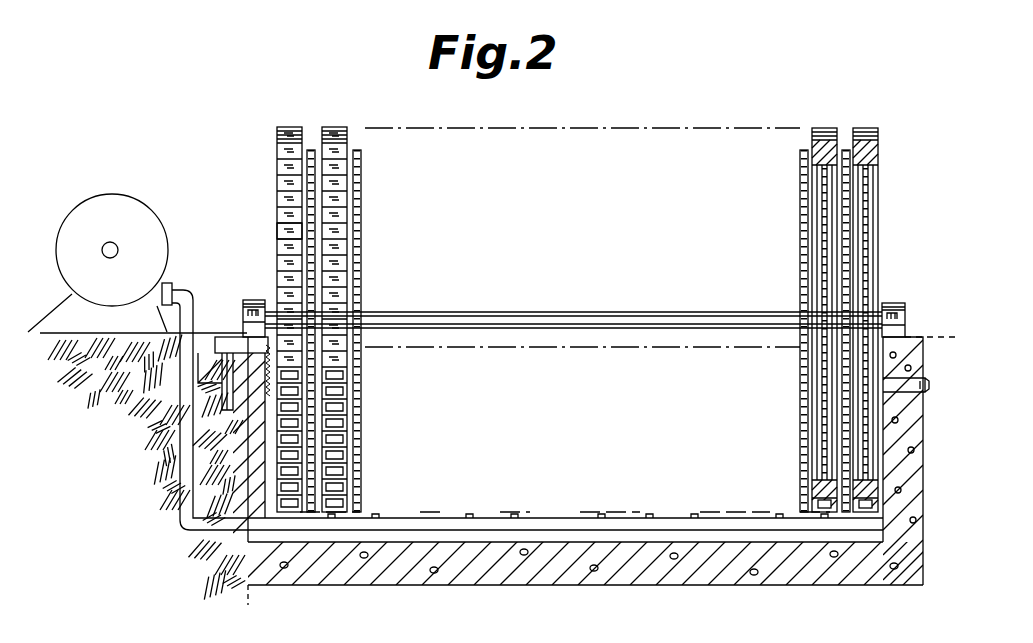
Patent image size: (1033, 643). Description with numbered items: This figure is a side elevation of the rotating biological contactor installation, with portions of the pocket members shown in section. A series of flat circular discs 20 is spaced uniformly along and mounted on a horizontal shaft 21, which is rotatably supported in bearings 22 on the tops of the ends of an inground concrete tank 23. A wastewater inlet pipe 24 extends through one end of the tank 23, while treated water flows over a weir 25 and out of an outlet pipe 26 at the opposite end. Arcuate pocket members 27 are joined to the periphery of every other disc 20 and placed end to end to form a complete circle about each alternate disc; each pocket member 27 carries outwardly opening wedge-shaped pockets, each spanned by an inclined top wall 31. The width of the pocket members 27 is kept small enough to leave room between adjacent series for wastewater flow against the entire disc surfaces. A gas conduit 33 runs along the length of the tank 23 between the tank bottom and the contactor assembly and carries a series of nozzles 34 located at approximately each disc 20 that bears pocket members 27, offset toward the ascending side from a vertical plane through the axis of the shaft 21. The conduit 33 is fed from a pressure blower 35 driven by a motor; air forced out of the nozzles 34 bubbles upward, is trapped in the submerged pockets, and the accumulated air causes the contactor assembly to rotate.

The flat circular discs 20 is at (845, 150).
The horizontal shaft 21 is at (548, 312).
The bearings 22 is at (252, 300).
The inground concrete tank 23 is at (916, 337).
The wastewater inlet pipe 24 is at (926, 385).
The weir 25 is at (267, 350).
The outlet pipe 26 is at (228, 405).
The arcuate pocket members 27 is at (293, 127).
The inclined top wall 31 is at (278, 228).
The gas conduit 33 is at (625, 518).
The nozzles 34 is at (514, 513).
The pressure blower 35 is at (152, 209).